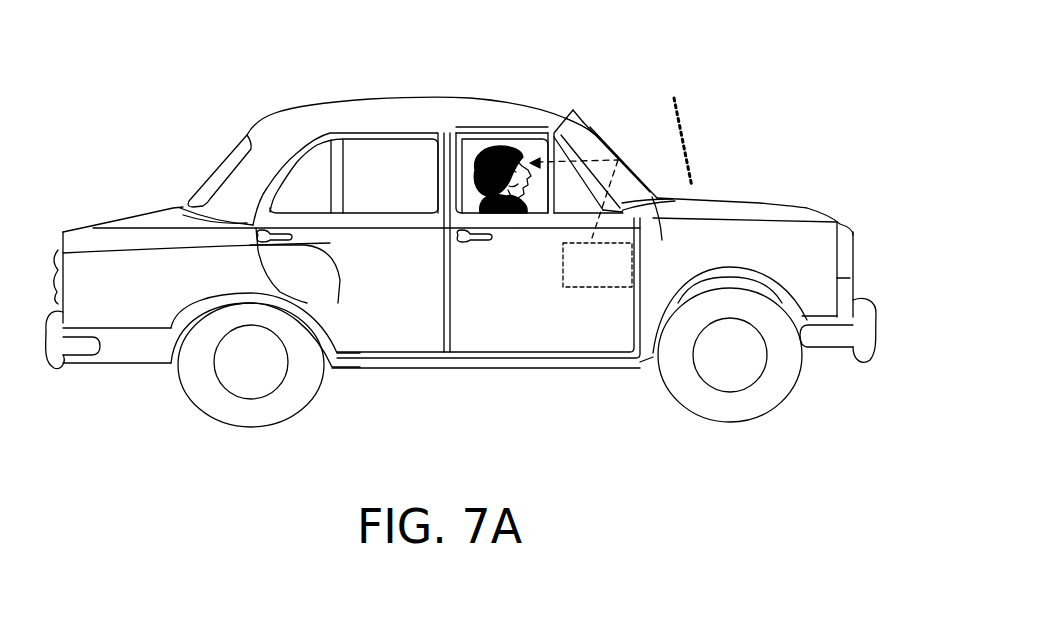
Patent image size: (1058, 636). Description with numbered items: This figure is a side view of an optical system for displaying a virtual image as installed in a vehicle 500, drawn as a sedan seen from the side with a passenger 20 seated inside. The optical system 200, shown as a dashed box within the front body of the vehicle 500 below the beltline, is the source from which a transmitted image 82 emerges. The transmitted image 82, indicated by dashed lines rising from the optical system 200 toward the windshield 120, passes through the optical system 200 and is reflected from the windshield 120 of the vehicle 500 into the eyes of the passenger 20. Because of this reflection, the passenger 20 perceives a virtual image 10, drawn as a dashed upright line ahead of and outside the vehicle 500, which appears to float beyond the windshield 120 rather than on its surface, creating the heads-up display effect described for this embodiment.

The vehicle 500 is at (168, 122).
The passenger 20 is at (478, 142).
The windshield 120 is at (600, 137).
The virtual image 10 is at (678, 112).
The transmitted image 82 is at (593, 238).
The optical system 200 is at (563, 272).